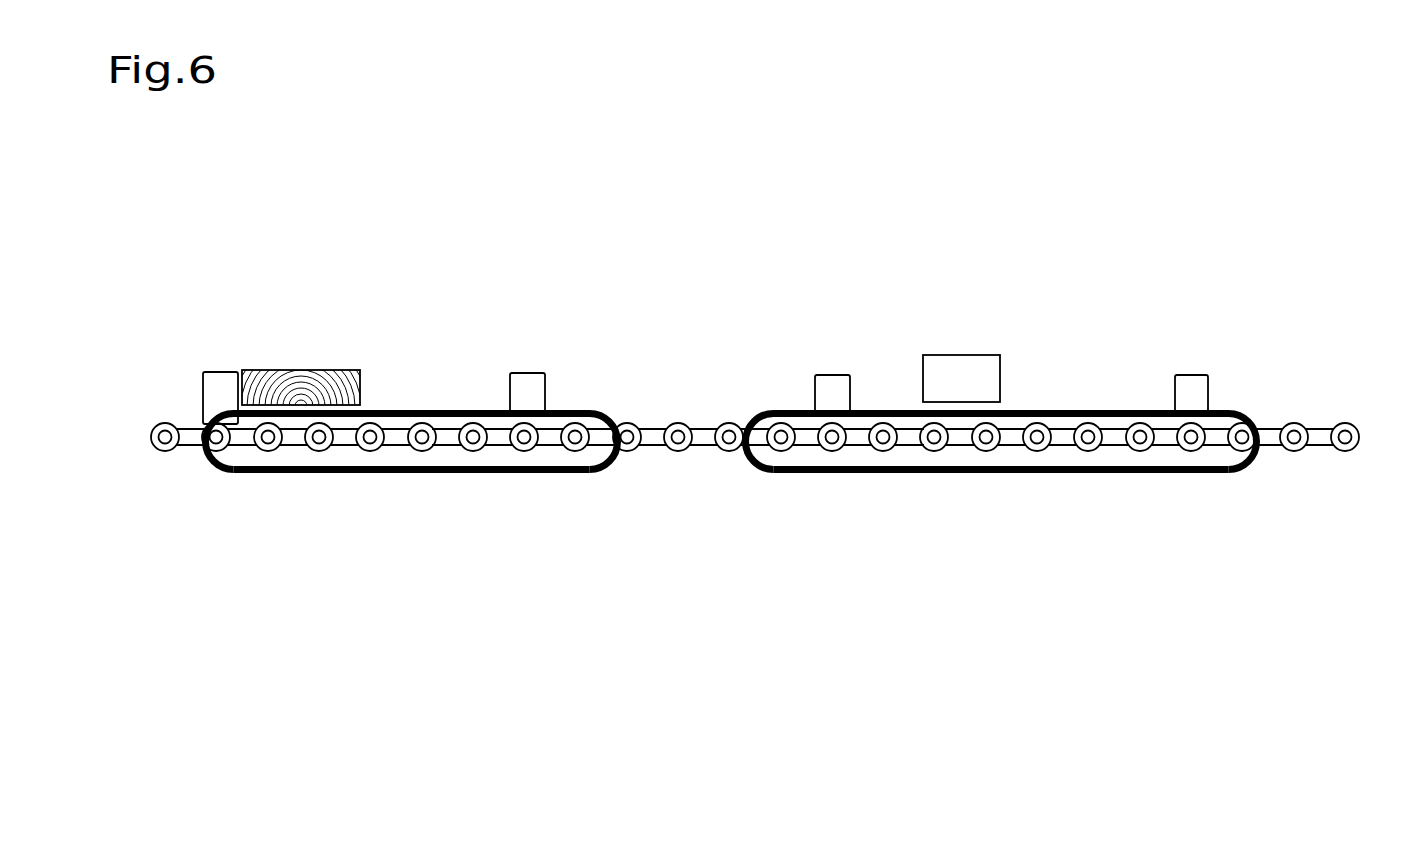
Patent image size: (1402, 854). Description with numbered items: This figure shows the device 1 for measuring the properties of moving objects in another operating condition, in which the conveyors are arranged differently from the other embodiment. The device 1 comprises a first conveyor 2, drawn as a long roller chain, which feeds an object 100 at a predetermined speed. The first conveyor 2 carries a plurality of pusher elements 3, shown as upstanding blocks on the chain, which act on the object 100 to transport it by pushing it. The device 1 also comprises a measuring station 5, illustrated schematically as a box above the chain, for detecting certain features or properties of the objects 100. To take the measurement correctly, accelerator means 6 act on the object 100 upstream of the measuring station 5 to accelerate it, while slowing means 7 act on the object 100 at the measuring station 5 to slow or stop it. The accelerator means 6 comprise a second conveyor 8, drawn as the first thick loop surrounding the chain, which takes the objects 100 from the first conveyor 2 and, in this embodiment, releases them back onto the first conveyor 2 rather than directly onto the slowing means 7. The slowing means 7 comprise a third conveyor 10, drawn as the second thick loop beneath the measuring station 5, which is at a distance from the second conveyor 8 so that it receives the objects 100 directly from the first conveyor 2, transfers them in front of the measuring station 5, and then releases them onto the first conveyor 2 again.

The device for measuring the properties of moving objects 1 is at (1090, 197).
The first conveyor 2 is at (185, 457).
The pusher elements 3 is at (220, 383).
The measuring station 5 is at (993, 355).
The accelerator means 6 is at (435, 393).
The slowing means 7 is at (1087, 395).
The second conveyor 8 is at (432, 475).
The third conveyor 10 is at (910, 475).
The object 100 is at (288, 388).